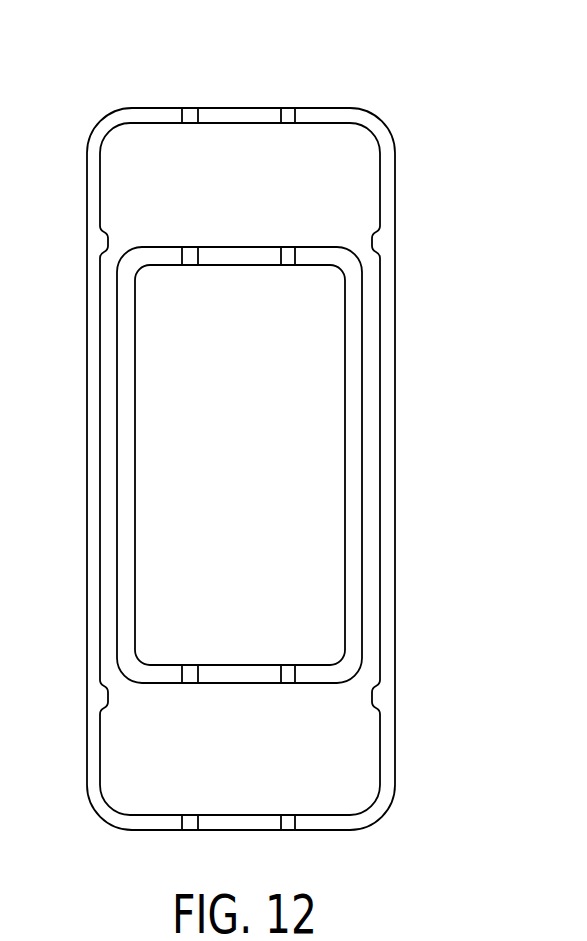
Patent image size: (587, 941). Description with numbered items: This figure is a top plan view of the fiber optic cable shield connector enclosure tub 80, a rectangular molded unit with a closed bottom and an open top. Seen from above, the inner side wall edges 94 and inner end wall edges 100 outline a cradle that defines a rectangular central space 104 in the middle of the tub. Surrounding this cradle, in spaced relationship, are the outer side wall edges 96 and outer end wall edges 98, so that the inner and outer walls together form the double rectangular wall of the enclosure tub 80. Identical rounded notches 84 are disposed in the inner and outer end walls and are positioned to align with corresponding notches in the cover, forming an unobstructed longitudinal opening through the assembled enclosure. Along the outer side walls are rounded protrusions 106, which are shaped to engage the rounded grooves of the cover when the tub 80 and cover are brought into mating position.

The insert 80 is at (233, 74).
The end wall 84 is at (237, 113).
The inner frame wall 94 is at (123, 357).
The outer frame wall 96 is at (93, 452).
The outer rib 98 is at (325, 117).
The inner rib 100 is at (167, 253).
The opening 104 is at (248, 457).
The notch 106 is at (107, 238).